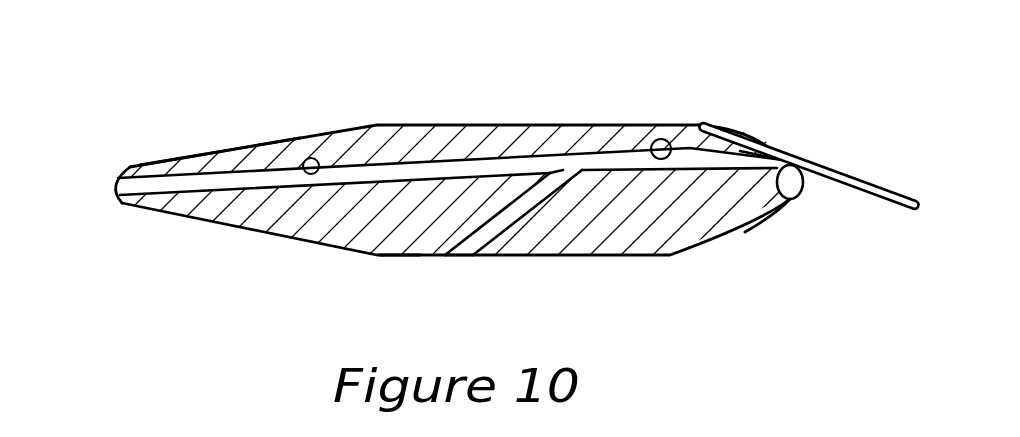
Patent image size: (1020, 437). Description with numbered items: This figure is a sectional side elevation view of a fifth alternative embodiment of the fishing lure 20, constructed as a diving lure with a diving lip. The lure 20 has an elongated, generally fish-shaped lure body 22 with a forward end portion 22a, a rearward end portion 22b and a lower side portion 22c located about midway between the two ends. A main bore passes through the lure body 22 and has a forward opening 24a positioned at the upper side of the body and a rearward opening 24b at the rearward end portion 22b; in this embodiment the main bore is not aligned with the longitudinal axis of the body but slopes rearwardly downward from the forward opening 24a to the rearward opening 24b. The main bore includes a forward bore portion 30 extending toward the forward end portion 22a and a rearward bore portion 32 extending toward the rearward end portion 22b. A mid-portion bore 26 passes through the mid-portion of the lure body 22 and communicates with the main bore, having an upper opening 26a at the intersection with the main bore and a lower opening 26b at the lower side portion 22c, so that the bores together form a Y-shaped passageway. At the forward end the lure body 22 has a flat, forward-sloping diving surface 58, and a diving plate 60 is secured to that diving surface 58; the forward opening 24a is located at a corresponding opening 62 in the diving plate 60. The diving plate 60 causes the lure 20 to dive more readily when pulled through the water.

The fishing lure 20 is at (517, 96).
The lure body 22 is at (448, 128).
The forward end portion 22a is at (805, 186).
The rearward end portion 22b is at (147, 164).
The lower side portion 22c is at (400, 256).
The forward opening 24a is at (773, 150).
The rearward opening 24b is at (112, 188).
The mid-portion bore 26 is at (530, 203).
The upper opening 26a is at (563, 170).
The lower opening 26b is at (460, 256).
The forward bore portion 30 is at (656, 141).
The rearward bore portion 32 is at (305, 160).
The diving surface 58 is at (800, 200).
The diving plate 60 is at (835, 172).
The opening in the diving plate 62 is at (770, 150).